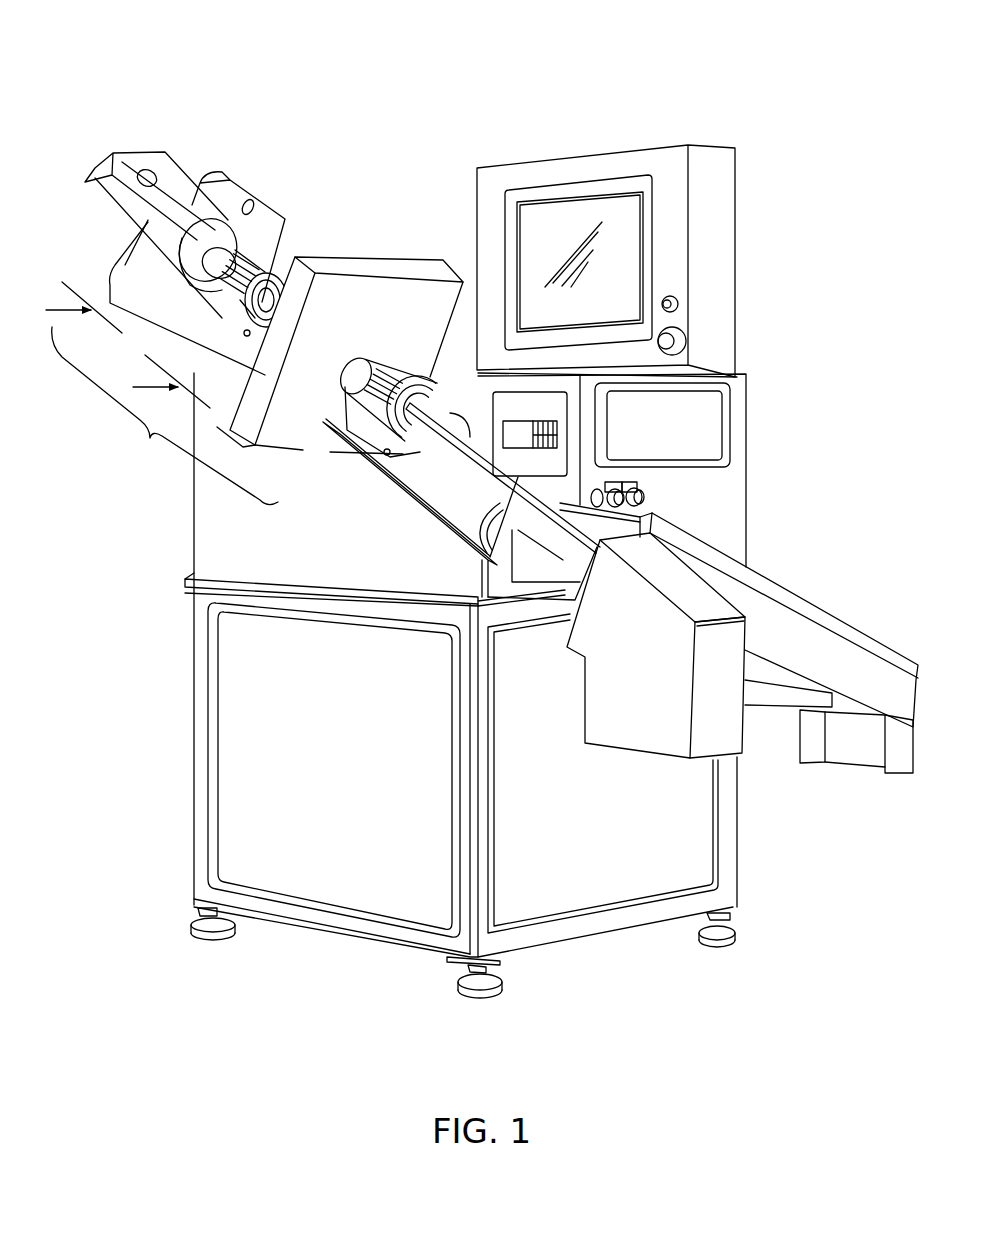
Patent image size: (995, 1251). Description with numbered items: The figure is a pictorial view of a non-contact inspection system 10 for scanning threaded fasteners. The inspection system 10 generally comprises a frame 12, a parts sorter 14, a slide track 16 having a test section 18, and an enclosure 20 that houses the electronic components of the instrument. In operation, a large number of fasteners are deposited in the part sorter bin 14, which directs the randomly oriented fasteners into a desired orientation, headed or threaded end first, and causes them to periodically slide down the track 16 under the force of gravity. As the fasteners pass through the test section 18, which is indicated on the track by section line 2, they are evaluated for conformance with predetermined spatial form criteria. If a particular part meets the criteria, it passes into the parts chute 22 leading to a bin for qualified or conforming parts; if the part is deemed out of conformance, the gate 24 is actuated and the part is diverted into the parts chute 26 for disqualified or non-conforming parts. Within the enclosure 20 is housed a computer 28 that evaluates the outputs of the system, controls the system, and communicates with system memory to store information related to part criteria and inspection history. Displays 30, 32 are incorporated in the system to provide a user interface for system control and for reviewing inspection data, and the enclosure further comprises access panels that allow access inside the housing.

The non-contact inspection system 10 is at (790, 60).
The frame 12 is at (197, 760).
The parts sorter 14 is at (225, 182).
The slide track 16 is at (150, 200).
The test section 18 is at (165, 416).
The section line 2- 2 is at (128, 345).
The enclosure 20 is at (650, 147).
The parts chute 22 is at (737, 728).
The gate 24 is at (537, 515).
The parts chute 26 is at (758, 568).
The computer 28 is at (748, 366).
The display 30 is at (628, 225).
The display 32 is at (706, 432).